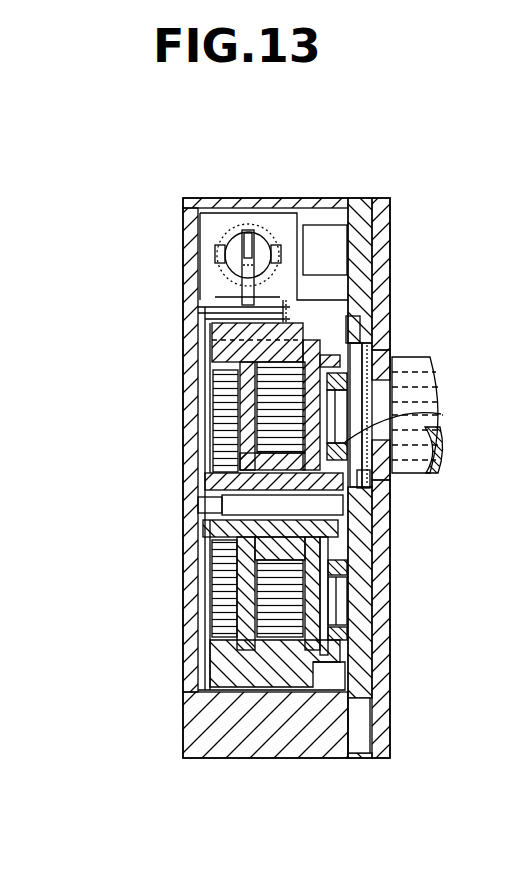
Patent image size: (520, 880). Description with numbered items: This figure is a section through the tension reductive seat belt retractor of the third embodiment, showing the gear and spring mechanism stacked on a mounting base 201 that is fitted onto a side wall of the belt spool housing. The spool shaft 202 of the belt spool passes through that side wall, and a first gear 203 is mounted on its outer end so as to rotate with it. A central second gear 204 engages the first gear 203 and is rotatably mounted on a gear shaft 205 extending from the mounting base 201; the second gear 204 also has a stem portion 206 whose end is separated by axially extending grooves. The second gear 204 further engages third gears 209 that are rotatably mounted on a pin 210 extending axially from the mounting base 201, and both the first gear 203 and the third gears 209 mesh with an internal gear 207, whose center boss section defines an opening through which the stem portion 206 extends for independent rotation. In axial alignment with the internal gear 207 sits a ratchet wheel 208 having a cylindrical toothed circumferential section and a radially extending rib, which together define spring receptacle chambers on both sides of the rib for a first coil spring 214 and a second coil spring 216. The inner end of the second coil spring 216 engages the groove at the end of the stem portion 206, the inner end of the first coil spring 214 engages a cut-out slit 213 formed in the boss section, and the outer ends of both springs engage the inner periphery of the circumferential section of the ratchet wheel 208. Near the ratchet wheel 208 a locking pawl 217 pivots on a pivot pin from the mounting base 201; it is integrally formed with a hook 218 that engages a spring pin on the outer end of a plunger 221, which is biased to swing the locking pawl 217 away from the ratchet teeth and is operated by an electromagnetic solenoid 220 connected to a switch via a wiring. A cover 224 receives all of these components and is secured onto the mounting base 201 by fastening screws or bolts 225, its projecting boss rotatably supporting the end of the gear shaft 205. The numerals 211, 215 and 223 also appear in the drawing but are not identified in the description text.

The mounting base 201 is at (375, 208).
The spool shaft 202 is at (416, 360).
The first gear 203 is at (432, 419).
The second gear 204 is at (345, 598).
The gear shaft 205 is at (343, 505).
The stem portion 206 is at (205, 496).
The internal gear 207 is at (313, 664).
The ratchet wheel 208 is at (250, 690).
The third gears 209 is at (386, 655).
The pin 210 is at (376, 615).
The side wall 211 is at (378, 306).
The cut-out slit 213 is at (215, 629).
The first coil spring 214 is at (300, 632).
The upper coil 215 is at (215, 380).
The second coil spring 216 is at (215, 570).
The locking pawl 217 is at (222, 286).
The hook 218 is at (205, 315).
The electromagnetic solenoid 220 is at (241, 230).
The plunger 221 is at (216, 240).
The pin 223 is at (253, 192).
The cover 224 is at (294, 199).
The fastening screws or bolts 225 is at (385, 538).